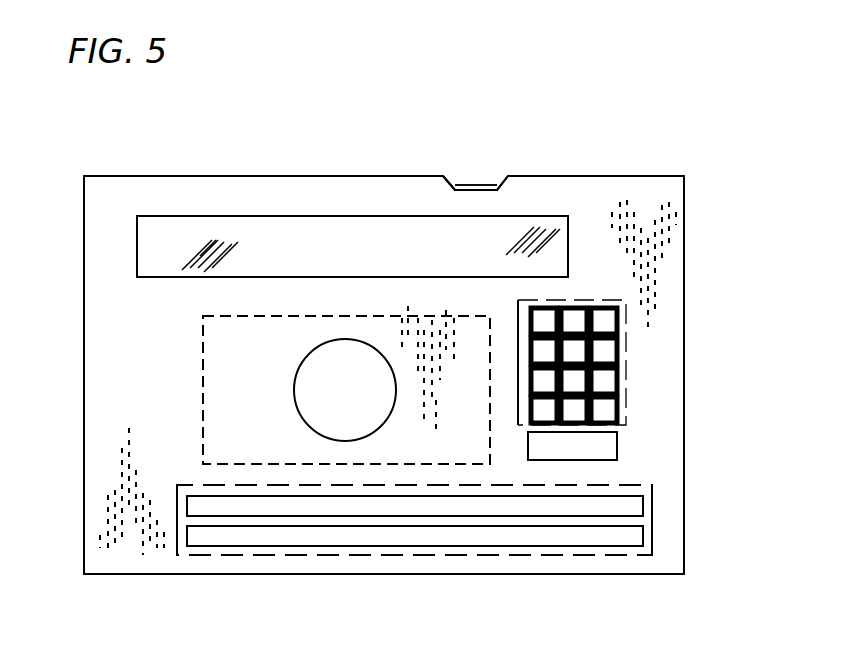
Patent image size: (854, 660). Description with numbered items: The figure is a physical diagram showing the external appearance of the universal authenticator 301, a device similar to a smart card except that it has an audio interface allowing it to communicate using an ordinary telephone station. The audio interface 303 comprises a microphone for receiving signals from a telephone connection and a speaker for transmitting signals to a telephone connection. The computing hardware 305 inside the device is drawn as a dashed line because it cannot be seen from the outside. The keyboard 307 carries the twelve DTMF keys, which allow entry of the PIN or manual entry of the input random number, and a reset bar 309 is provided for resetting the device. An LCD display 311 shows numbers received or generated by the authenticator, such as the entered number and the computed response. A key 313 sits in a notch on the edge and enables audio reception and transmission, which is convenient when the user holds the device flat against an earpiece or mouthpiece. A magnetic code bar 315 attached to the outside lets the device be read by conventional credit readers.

The universal authenticator 301 is at (196, 176).
The audio interface 303 is at (312, 388).
The computing hardware 305 is at (203, 380).
The keyboard 307 is at (627, 380).
The reset bar 309 is at (617, 450).
The LCD display 311 is at (316, 236).
The key 313 is at (473, 186).
The magnetic code bar 315 is at (627, 556).